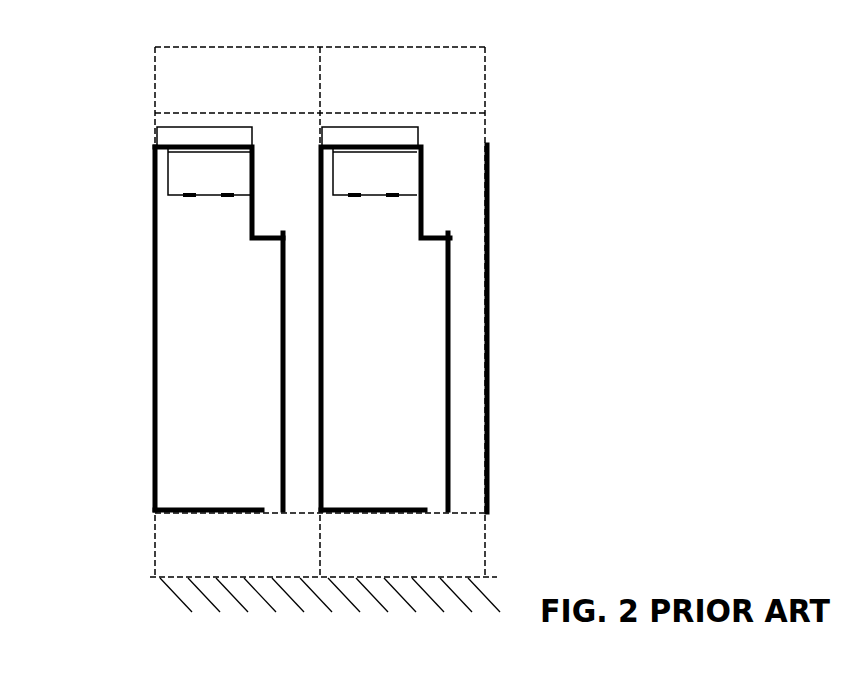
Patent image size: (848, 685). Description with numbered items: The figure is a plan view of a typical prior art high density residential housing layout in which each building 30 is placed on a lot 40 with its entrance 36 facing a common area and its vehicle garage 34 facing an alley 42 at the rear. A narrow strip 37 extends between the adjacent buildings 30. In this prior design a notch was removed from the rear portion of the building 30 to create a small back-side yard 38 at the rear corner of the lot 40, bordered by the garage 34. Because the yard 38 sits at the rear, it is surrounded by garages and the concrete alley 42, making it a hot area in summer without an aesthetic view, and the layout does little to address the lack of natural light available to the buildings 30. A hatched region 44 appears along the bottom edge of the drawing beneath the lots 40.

The building 30 is at (302, 328).
The vehicle garage 34 is at (292, 172).
The entrance 36 is at (278, 517).
The narrow strip 37 is at (298, 427).
The back-side yard 38 is at (285, 178).
The lot 40 is at (137, 351).
The alley 42 is at (325, 78).
The substrate 44 is at (188, 605).